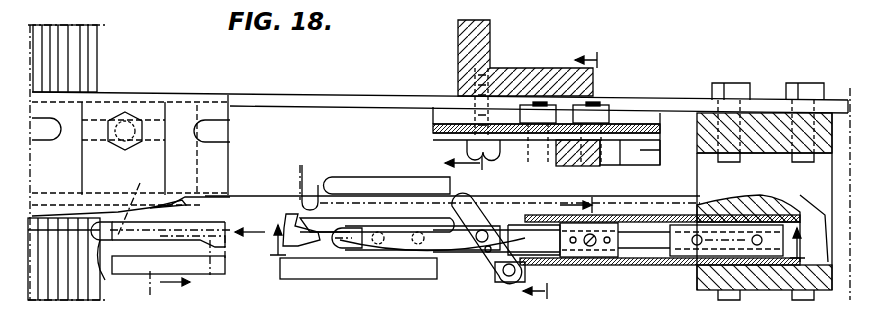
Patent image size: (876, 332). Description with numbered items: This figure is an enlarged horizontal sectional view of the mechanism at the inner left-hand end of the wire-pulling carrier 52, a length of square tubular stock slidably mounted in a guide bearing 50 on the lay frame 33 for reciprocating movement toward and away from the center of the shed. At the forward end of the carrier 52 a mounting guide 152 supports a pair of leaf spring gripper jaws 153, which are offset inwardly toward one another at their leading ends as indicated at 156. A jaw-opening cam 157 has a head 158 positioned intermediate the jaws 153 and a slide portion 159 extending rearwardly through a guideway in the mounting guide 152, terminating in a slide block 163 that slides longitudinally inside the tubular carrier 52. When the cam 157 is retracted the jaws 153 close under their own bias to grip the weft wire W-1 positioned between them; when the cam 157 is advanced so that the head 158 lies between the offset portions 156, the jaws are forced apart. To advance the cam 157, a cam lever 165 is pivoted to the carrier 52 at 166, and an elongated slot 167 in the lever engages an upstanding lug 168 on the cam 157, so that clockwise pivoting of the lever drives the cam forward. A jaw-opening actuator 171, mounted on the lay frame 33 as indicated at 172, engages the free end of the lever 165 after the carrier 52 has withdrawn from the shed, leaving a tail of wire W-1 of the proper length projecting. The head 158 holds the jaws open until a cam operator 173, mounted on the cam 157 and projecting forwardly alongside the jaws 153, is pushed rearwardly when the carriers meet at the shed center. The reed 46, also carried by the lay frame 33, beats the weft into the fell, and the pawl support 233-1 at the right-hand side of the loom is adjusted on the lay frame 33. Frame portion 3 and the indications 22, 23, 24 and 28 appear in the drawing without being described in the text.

The machine frame 3 is at (72, 50).
The pawl support 233-1 is at (148, 112).
The lay frame 33 is at (491, 36).
The direction arrow 24 is at (598, 62).
The cam lever 165 is at (303, 168).
The jaw-opening actuator 171 is at (352, 178).
The direction arrow 28 is at (476, 165).
The actuator mounting 172 is at (618, 161).
The leaf spring gripper jaws 153 is at (296, 222).
The reed 46 is at (135, 207).
The direction arrow 22 is at (530, 234).
The slide block 163 is at (752, 214).
The direction arrow 23 is at (546, 293).
The mounting guide 152 is at (603, 259).
The slide portion 159 is at (650, 246).
The wire-pulling carrier 52 is at (676, 266).
The guide bearing 50 is at (770, 283).
The pivot 166 is at (510, 278).
The elongated slot 167 is at (492, 253).
The upstanding lug 168 is at (478, 248).
The jaw-opening cam 157 is at (400, 240).
The cam head 158 is at (364, 292).
The offset portions 156 is at (339, 244).
The cam operator 173 is at (296, 279).
The weft wire W-1 is at (129, 259).